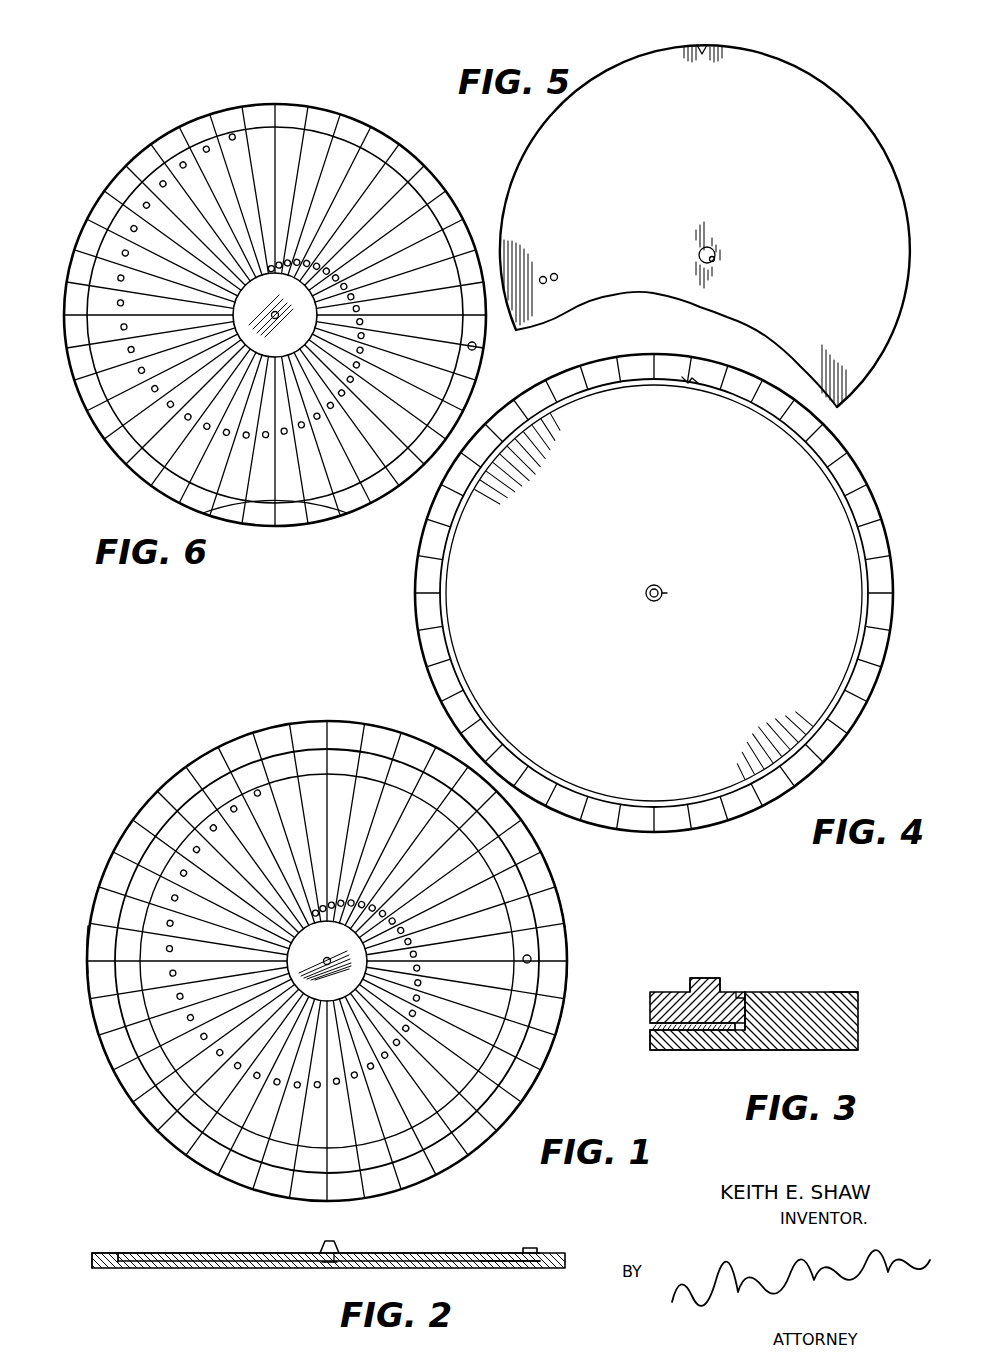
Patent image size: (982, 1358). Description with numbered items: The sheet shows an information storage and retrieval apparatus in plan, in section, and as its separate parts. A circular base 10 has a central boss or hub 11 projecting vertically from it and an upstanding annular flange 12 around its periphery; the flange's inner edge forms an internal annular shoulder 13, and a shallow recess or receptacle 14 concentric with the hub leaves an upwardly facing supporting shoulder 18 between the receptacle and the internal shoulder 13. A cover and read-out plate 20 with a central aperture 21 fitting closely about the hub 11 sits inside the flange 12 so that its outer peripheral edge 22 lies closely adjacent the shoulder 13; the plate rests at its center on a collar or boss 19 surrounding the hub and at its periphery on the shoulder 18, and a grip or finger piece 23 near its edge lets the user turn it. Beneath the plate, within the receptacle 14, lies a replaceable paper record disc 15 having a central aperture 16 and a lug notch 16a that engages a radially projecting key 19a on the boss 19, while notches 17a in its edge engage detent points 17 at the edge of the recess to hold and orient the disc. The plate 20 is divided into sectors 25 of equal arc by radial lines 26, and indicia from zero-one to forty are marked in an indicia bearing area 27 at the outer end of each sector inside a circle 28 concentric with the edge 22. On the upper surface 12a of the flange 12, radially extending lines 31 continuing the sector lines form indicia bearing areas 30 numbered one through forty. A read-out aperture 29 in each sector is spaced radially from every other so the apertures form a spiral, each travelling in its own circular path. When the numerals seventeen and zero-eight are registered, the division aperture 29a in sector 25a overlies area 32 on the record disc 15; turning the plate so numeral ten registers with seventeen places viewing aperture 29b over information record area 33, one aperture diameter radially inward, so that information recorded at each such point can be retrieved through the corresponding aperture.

In FIG. 4, the base 10 is at (654, 608).
In FIG. 1, the base 10 is at (327, 961).
In FIG. 3, the base 10 is at (665, 1052).
In FIG. 2, the base 10 is at (185, 1268).
In FIG. 4, the boss or hub 11 is at (667, 573).
In FIG. 2, the boss or hub 11 is at (326, 1245).
In FIG. 3, the upstanding annular flange 12 is at (805, 1000).
In FIG. 2, the upstanding annular flange 12 is at (102, 1253).
In FIG. 1, the upper surface of the flange 12a is at (563, 992).
In FIG. 3, the upper surface of the flange 12a is at (840, 992).
In FIG. 2, the upper surface of the flange 12a is at (93, 1253).
In FIG. 4, the internal annular shoulder 13 is at (654, 616).
In FIG. 3, the internal annular shoulder 13 is at (745, 990).
In FIG. 2, the internal annular shoulder 13 is at (533, 1248).
In FIG. 4, the recess or receptacle 14 is at (654, 621).
In FIG. 3, the recess or receptacle 14 is at (708, 1031).
In FIG. 2, the recess or receptacle 14 is at (492, 1262).
In FIG. 5, the record disc member 15 is at (558, 167).
In FIG. 3, the record disc member 15 is at (652, 1027).
In FIG. 5, the central aperture 16 is at (712, 248).
In FIG. 5, the key or lug notch 16a is at (716, 262).
In FIG. 4, the detent points 17 is at (667, 399).
In FIG. 5, the notch 17a is at (704, 46).
In FIG. 4, the supporting shoulder 18 is at (659, 593).
In FIG. 3, the supporting shoulder 18 is at (737, 1031).
In FIG. 2, the supporting shoulder 18 is at (120, 1256).
In FIG. 4, the collar or boss 19 is at (637, 605).
In FIG. 4, the radially projecting key 19a is at (689, 596).
In FIG. 2, the radially projecting key 19a is at (340, 1250).
In FIG. 6, the read-out plate 20 is at (275, 337).
In FIG. 1, the read-out plate 20 is at (340, 961).
In FIG. 3, the read-out plate 20 is at (664, 998).
In FIG. 2, the read-out plate 20 is at (222, 1253).
In FIG. 6, the central aperture 21 is at (275, 315).
In FIG. 6, the outer peripheral edge 22 is at (275, 533).
In FIG. 3, the outer peripheral edge 22 is at (752, 1000).
In FIG. 6, the grip or finger piece 23 is at (492, 357).
In FIG. 1, the grip or finger piece 23 is at (562, 961).
In FIG. 3, the grip or finger piece 23 is at (708, 978).
In FIG. 6, the sectors 25 is at (263, 315).
In FIG. 1, the sectors 25 is at (327, 961).
In FIG. 1, the sector 25a is at (62, 944).
In FIG. 6, the radial lines 26 is at (275, 315).
In FIG. 1, the radial lines 26 is at (307, 961).
In FIG. 6, the indicia bearing area 27 is at (274, 314).
In FIG. 1, the indicia bearing area 27 is at (327, 961).
In FIG. 6, the circle 28 is at (275, 290).
In FIG. 1, the circle 28 is at (327, 962).
In FIG. 6, the read-out aperture 29 is at (240, 303).
In FIG. 1, the division aperture 29a is at (188, 949).
In FIG. 1, the viewing aperture 29b is at (198, 995).
In FIG. 4, the indicia bearing areas 30 is at (514, 595).
In FIG. 1, the indicia bearing areas 30 is at (205, 963).
In FIG. 4, the radially extending lines 31 is at (636, 595).
In FIG. 1, the radially extending lines 31 is at (416, 940).
In FIG. 5, the area 32 is at (544, 276).
In FIG. 5, the information record area 33 is at (558, 278).